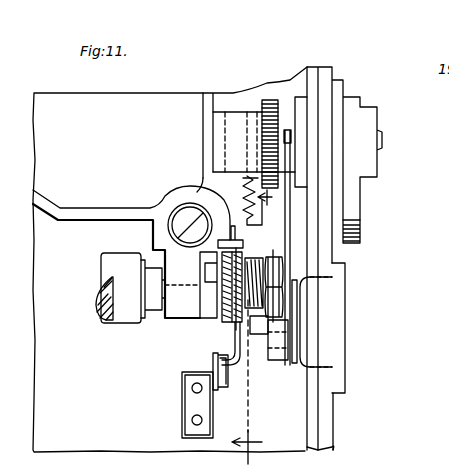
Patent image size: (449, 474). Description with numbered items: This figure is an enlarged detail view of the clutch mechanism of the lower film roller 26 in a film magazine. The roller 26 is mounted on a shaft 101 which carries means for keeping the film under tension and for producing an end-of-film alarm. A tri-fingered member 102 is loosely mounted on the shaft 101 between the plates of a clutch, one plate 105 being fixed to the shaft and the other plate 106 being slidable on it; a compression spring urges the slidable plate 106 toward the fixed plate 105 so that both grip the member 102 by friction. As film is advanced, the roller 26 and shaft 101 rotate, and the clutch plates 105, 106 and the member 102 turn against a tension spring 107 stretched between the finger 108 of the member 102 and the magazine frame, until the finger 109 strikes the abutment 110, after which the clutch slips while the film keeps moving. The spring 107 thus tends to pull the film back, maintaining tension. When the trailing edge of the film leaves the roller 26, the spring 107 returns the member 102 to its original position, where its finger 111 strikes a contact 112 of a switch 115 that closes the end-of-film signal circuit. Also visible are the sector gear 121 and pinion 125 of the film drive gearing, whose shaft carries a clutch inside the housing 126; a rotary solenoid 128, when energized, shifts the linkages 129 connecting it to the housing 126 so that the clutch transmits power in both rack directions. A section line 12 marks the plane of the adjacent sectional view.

The section line 12 is at (260, 327).
The lower film roller 26 is at (108, 262).
The shaft 101 is at (157, 290).
The tri-fingered member 102 is at (212, 357).
The clutch plate 105 is at (224, 305).
The slidable clutch plate 106 is at (246, 320).
The tension spring 107 is at (245, 178).
The finger 108 is at (226, 206).
The finger 109 is at (232, 312).
The abutment 110 is at (243, 247).
The finger 111 is at (224, 347).
The contact 112 is at (217, 388).
The switch 115 is at (226, 385).
The sector gear 121 is at (352, 212).
The pinion 125 is at (269, 100).
The housing 126 is at (225, 128).
The rotary solenoid 128 is at (338, 315).
The linkages 129 is at (302, 252).